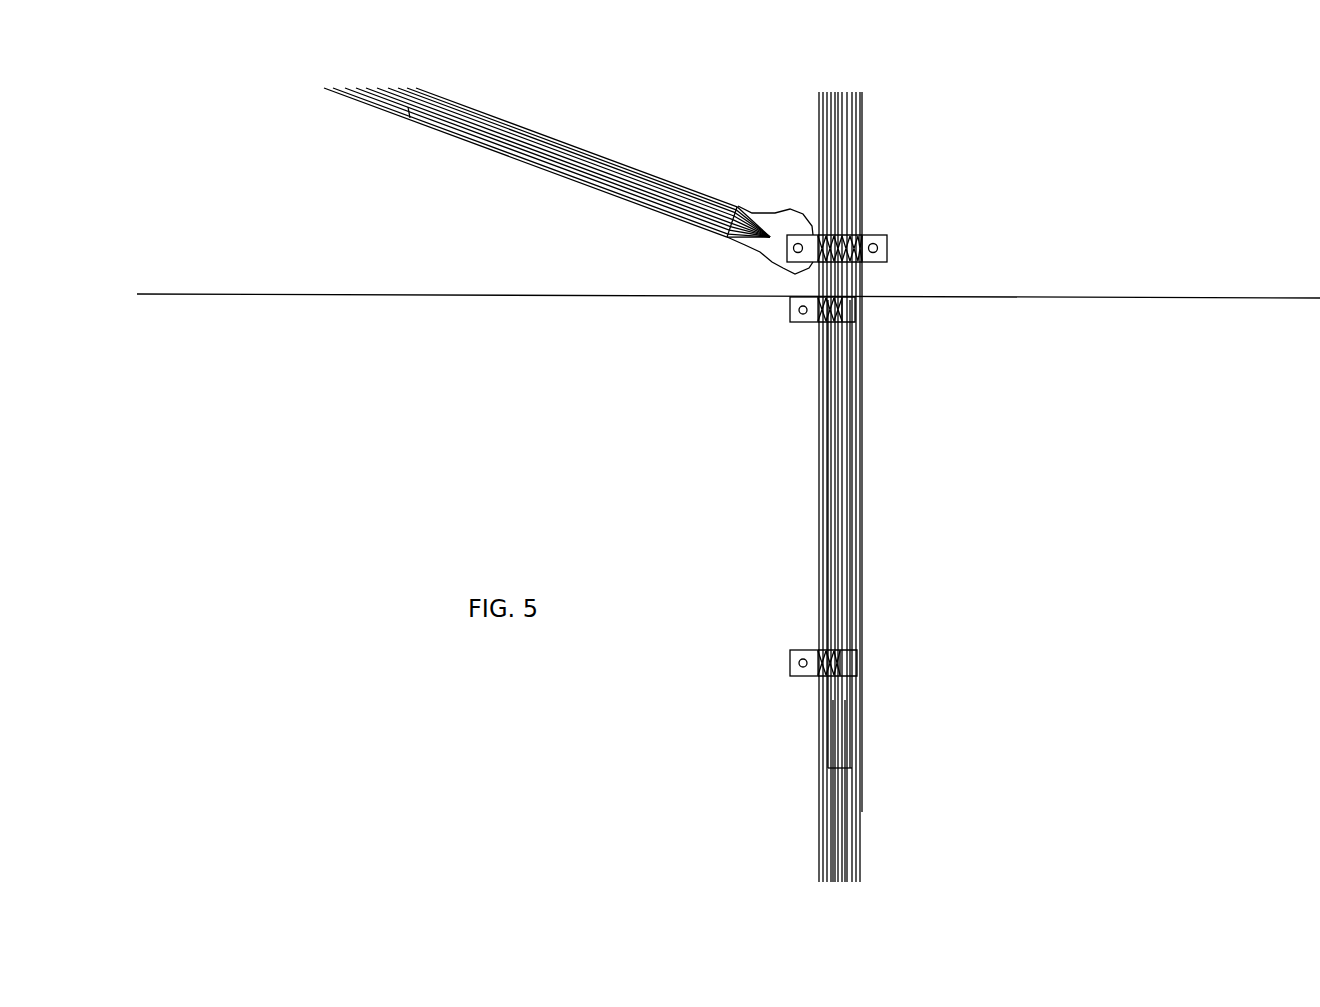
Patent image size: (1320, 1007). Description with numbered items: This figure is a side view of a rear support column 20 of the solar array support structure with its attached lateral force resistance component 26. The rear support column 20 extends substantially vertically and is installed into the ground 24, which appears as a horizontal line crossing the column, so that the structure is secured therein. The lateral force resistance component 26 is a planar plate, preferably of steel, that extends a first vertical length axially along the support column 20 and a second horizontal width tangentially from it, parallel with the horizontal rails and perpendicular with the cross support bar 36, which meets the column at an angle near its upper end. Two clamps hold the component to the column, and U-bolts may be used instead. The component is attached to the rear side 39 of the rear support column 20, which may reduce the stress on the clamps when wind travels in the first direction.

The rear support column 20 is at (837, 833).
The ground 24 is at (992, 332).
The lateral force resistance component 26 is at (862, 624).
The cross support bar 36 is at (573, 163).
The rear side 39 is at (866, 500).